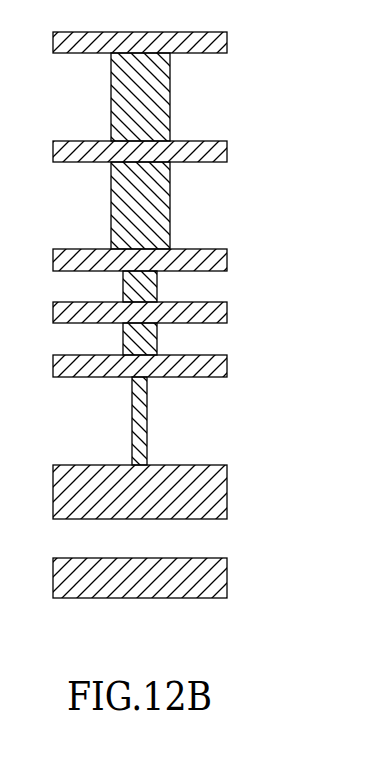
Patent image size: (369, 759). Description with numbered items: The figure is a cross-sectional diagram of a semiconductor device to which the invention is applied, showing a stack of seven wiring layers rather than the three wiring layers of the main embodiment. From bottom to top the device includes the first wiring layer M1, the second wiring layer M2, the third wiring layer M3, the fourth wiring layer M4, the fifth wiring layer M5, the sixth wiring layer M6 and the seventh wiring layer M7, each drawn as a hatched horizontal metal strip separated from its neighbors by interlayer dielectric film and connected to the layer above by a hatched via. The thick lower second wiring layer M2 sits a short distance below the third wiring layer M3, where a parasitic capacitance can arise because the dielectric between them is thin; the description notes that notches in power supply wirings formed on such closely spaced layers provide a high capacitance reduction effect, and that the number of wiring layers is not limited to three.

The first wiring layer M1 is at (227, 577).
The second wiring layer M2 is at (227, 488).
The third wiring layer M3 is at (227, 368).
The fourth wiring layer M4 is at (227, 313).
The fifth wiring layer M5 is at (227, 258).
The sixth wiring layer M6 is at (227, 152).
The seventh wiring layer M7 is at (227, 37).